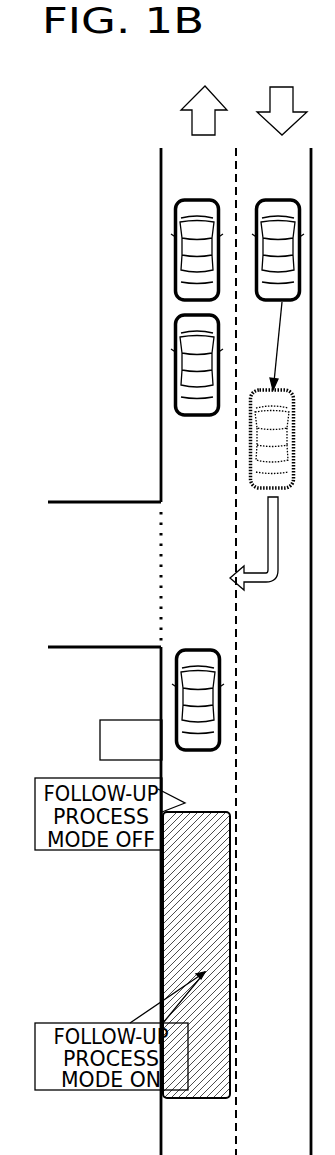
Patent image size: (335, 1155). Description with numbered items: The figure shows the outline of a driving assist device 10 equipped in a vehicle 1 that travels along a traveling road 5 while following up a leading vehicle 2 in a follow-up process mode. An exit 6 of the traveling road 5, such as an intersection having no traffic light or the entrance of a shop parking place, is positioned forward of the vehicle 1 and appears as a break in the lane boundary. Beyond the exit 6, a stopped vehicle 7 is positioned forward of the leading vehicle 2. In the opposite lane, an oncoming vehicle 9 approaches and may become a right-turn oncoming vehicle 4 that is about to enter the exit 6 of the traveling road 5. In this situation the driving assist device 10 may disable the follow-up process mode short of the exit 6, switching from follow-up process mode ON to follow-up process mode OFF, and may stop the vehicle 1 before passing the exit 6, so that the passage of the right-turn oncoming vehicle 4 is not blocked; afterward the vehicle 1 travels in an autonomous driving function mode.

The vehicle 1 is at (176, 690).
The leading vehicle 2 is at (175, 363).
The right-turn oncoming vehicle 4 is at (252, 441).
The traveling road 5 is at (161, 1101).
The exit of the traveling road 6 is at (161, 514).
The stopped vehicle 7 is at (175, 249).
The oncoming vehicle 9 is at (283, 199).
The driving assist device 10 is at (197, 712).